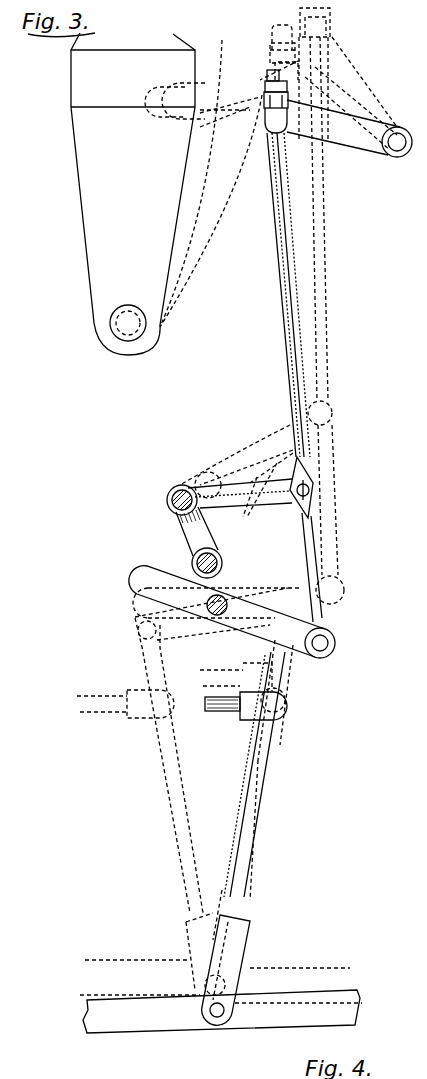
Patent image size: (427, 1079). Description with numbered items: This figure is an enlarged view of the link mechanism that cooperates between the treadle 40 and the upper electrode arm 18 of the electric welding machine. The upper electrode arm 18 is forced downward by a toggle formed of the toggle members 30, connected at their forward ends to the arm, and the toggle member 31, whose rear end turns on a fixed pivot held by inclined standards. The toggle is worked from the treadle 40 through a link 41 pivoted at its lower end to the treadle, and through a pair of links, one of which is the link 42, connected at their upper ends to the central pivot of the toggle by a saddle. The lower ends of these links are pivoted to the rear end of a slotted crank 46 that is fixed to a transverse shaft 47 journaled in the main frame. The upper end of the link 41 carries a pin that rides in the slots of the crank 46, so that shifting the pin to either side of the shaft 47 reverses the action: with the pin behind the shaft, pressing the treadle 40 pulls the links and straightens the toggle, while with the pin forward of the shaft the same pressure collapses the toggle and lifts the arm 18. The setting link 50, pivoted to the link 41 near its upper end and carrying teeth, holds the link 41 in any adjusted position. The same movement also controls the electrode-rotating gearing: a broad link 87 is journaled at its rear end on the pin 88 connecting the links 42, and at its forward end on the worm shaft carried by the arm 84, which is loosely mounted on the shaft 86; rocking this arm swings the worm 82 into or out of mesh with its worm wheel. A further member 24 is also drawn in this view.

The upper electrode arm 18 is at (59, 101).
The toggle members 30 is at (256, 130).
The toggle member 31 is at (342, 148).
The link 42 is at (300, 368).
The worm 82 is at (170, 507).
The arm 84 is at (183, 530).
The shaft 86 is at (222, 566).
The broad link 87 is at (240, 506).
The pin 88 is at (313, 492).
The transverse shaft 47 is at (216, 614).
The slotted crank 46 is at (320, 657).
The setting link 50 is at (210, 712).
The link 41 is at (250, 862).
The treadle 40 is at (93, 1028).
The frame member 24 is at (235, 1078).